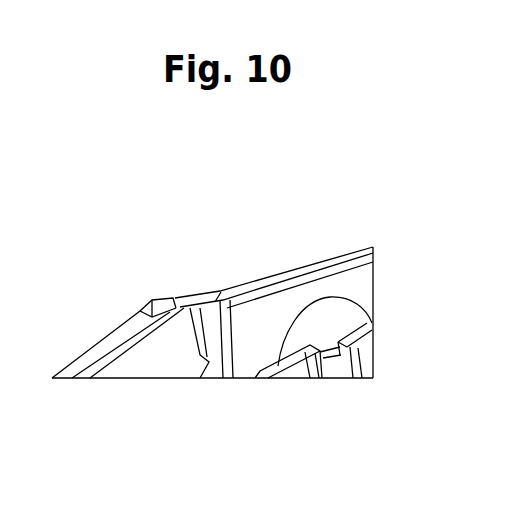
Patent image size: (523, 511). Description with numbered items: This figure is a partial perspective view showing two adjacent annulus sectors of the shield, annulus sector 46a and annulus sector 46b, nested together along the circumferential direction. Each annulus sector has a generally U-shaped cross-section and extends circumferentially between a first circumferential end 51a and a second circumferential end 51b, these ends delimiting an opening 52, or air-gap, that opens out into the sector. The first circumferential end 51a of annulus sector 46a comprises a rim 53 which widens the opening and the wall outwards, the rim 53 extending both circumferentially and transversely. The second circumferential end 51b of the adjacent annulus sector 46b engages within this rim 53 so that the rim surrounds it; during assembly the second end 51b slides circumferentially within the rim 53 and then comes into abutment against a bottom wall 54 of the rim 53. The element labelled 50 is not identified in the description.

The annulus sector 46a is at (377, 240).
The annulus sector 46b is at (83, 347).
The opening 50 is at (329, 322).
The first circumferential end 51a is at (238, 312).
The second circumferential end 51b is at (189, 348).
The opening 52 is at (267, 353).
The rim 53 is at (154, 299).
The bottom wall 54 is at (341, 333).